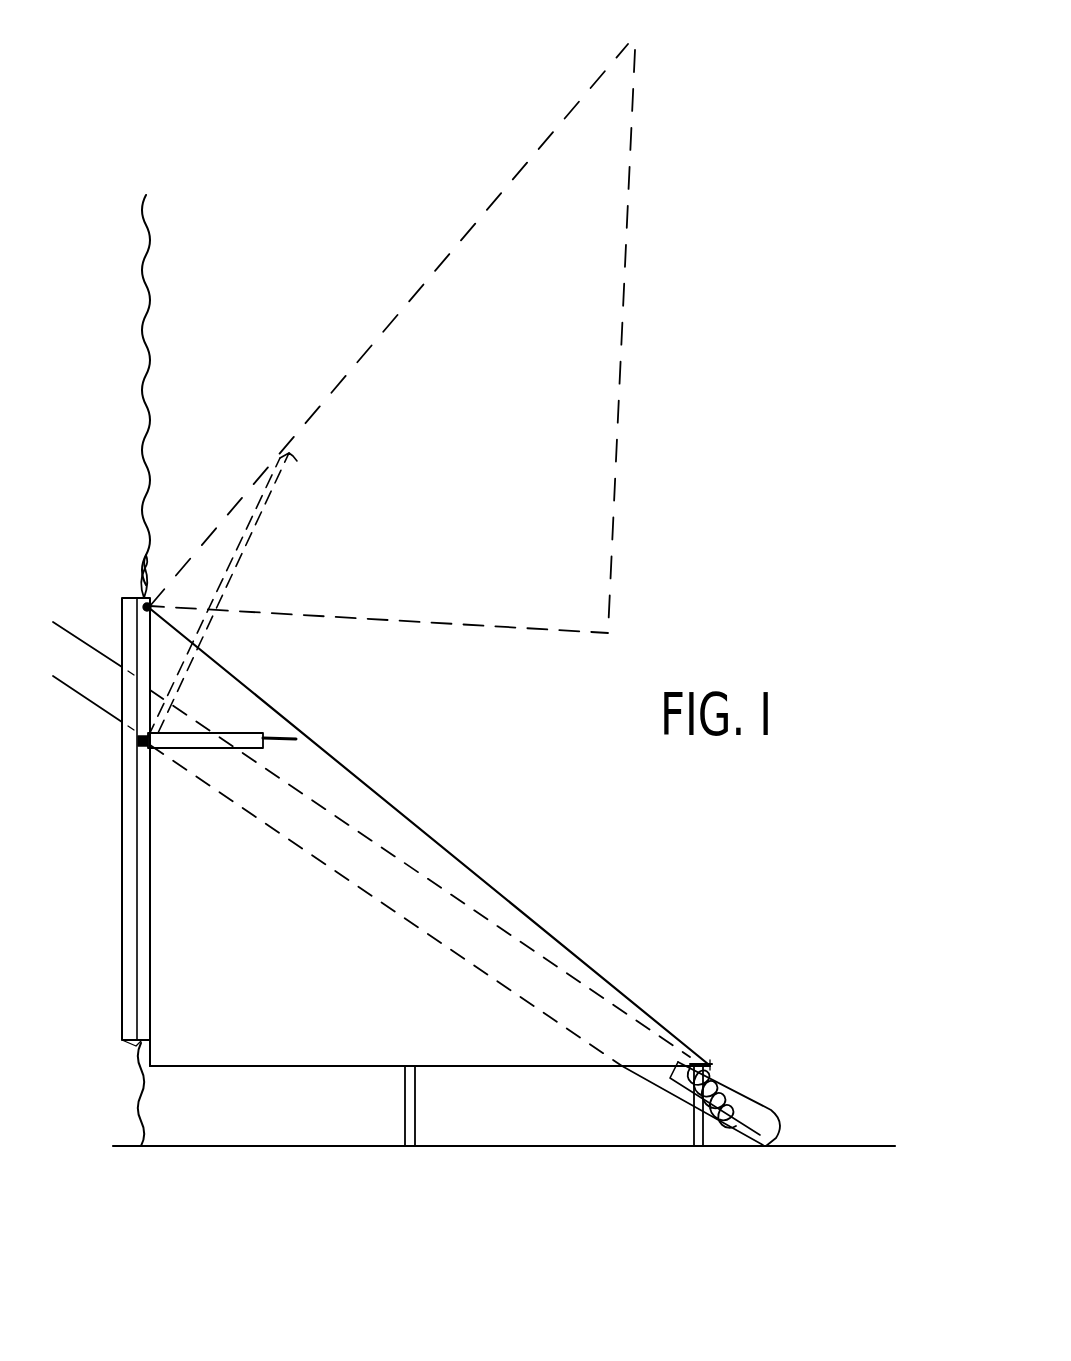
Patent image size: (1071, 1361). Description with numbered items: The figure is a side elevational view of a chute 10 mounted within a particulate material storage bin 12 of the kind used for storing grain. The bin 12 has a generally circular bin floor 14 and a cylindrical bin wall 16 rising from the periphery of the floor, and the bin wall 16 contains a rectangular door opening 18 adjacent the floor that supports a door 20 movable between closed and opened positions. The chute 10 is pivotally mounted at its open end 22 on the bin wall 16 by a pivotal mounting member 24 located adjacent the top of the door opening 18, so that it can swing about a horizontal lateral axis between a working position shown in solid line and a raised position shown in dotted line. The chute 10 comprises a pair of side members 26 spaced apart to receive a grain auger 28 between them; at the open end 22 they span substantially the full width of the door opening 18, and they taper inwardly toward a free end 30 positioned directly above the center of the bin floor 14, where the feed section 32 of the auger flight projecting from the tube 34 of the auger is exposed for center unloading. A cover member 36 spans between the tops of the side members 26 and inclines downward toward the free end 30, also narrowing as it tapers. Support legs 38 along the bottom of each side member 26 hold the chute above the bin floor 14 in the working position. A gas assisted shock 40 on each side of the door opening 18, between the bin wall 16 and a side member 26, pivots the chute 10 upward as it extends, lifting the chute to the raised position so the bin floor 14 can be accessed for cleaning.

The chute 10 is at (530, 806).
The particulate material storage bin 12 is at (102, 408).
The bin floor 14 is at (267, 1147).
The bin wall 16 is at (152, 408).
The door opening 18 is at (153, 861).
The door 20 is at (128, 862).
The open end 22 is at (151, 940).
The pivotal mounting member 24 is at (146, 569).
The side members 26 is at (233, 1045).
The grain auger 28 is at (80, 697).
The free end 30 is at (712, 1060).
The feed section 32 is at (748, 1106).
The tube 34 is at (663, 1073).
The cover member 36 is at (488, 880).
The support legs 38 is at (413, 1133).
The gas assisted shock 40 is at (212, 735).